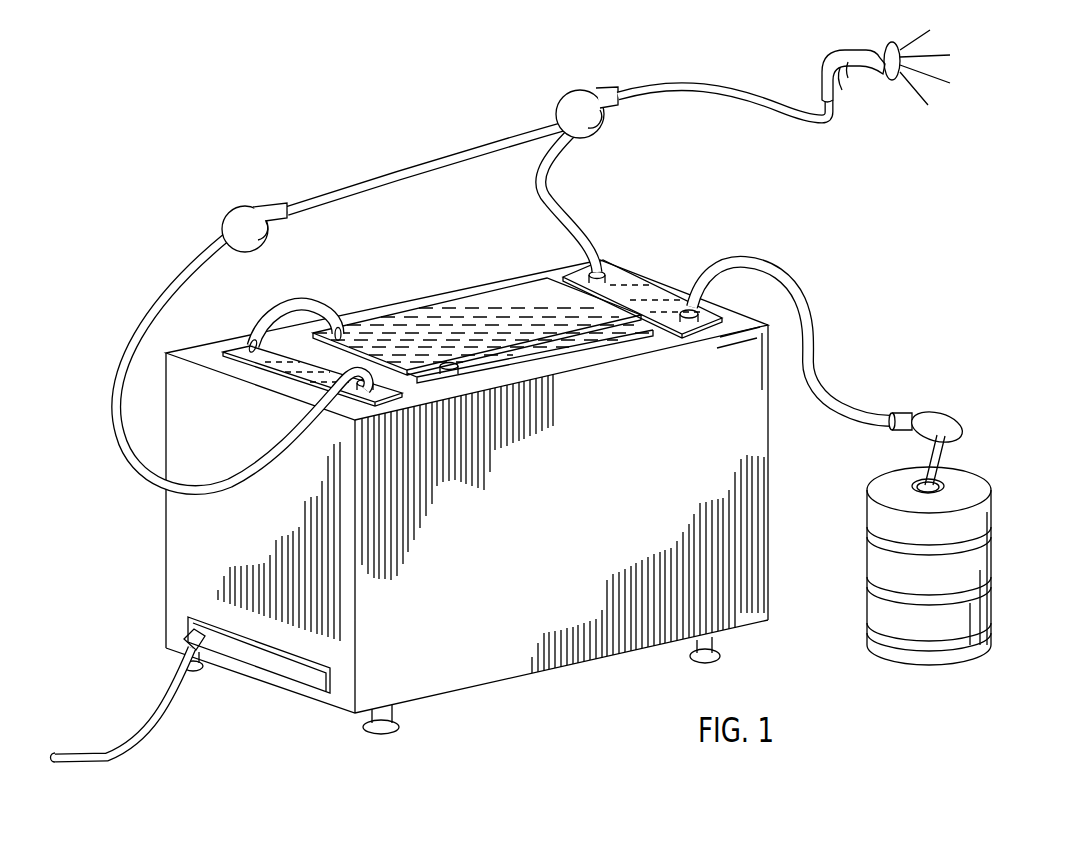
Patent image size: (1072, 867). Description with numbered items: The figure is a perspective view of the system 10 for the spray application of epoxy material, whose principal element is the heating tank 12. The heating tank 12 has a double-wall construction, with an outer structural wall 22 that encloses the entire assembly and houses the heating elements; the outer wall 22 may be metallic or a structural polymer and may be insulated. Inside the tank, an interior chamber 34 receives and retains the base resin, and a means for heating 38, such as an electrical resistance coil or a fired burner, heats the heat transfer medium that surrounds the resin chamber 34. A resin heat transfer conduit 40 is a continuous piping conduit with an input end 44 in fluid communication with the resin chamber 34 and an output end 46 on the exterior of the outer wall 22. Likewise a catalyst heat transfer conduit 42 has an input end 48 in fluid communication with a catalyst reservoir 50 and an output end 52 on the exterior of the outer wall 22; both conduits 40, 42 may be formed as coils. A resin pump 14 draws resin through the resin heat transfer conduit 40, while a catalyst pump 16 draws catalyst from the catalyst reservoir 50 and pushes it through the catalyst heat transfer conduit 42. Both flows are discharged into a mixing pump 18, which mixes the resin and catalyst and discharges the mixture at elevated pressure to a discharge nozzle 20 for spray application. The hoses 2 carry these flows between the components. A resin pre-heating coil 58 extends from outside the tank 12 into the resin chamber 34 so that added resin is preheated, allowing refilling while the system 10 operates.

The hose 2 is at (128, 445).
The system 10 is at (278, 758).
The heating tank 12 is at (504, 644).
The resin pump 14 is at (248, 208).
The catalyst pump 16 is at (945, 418).
The mixing pump 18 is at (607, 123).
The discharge nozzle 20 is at (834, 88).
The outer structural wall 22 is at (548, 522).
The interior chamber 34 is at (453, 325).
The means for heating 38 is at (255, 653).
The resin heat transfer conduit 40 is at (262, 365).
The catalyst heat transfer conduit 42 is at (630, 282).
The input end 44 is at (345, 332).
The output end 46 is at (543, 123).
The input end 48 is at (942, 467).
The catalyst reservoir 50 is at (973, 562).
The output end 52 is at (567, 133).
The resin pre-heating coil 58 is at (541, 350).